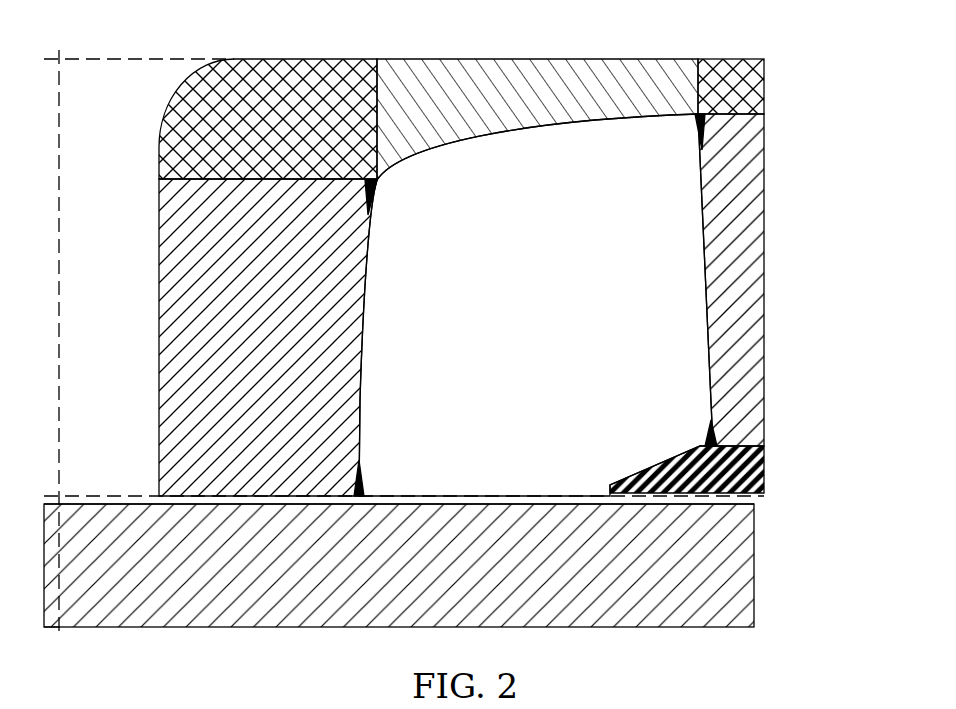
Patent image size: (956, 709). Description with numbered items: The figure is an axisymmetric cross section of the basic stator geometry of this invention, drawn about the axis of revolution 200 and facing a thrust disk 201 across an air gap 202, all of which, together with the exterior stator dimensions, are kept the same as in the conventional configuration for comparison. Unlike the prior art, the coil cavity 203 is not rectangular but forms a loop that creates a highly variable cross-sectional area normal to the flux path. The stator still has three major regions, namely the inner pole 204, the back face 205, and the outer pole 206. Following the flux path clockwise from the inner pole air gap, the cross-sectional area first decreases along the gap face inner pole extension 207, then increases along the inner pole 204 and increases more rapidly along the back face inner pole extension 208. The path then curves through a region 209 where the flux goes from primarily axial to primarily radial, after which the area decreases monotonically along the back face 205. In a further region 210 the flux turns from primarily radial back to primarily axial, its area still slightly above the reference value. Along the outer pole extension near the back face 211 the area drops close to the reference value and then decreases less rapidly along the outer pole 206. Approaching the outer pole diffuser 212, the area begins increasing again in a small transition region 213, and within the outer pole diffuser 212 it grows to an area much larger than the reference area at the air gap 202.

The axis of revolution 200 is at (60, 308).
The thrust disk 201 is at (679, 566).
The air gap 202 is at (263, 500).
The coil cavity 203 is at (552, 283).
The inner pole 204 is at (241, 395).
The back face 205 is at (502, 90).
The outer pole 206 is at (742, 228).
The gap face inner pole extension 207 is at (366, 493).
The back face inner pole extension 208 is at (383, 185).
The inner pole to back face transition region 209 is at (280, 114).
The back face to outer pole transition region 210 is at (736, 82).
The outer pole extension near the back face 211 is at (697, 118).
The outer pole diffuser 212 is at (707, 470).
The transition region 213 is at (705, 438).